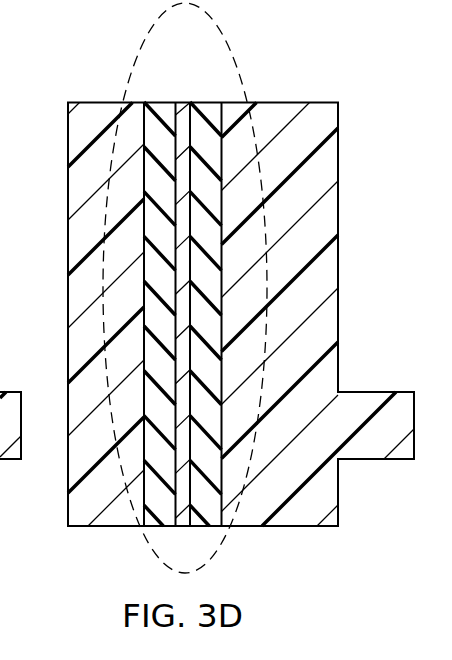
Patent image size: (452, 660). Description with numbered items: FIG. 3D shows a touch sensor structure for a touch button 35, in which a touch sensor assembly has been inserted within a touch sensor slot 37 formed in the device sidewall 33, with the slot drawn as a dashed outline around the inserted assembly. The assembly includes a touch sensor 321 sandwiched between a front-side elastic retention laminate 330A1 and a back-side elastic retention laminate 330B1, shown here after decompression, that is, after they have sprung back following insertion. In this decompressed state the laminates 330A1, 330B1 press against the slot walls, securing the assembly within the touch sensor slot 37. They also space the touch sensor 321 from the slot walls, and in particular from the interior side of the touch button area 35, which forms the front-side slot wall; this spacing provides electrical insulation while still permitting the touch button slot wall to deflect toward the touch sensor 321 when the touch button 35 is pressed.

The sidewall 33 is at (97, 102).
The front-side elastic retention laminate after decompression 330A1 is at (157, 107).
The touch sensor 321 is at (183, 110).
The back-side elastic retention laminate after decompression 330B1 is at (208, 107).
The touch button 35 is at (74, 301).
The touch sensor slot 37 is at (207, 551).